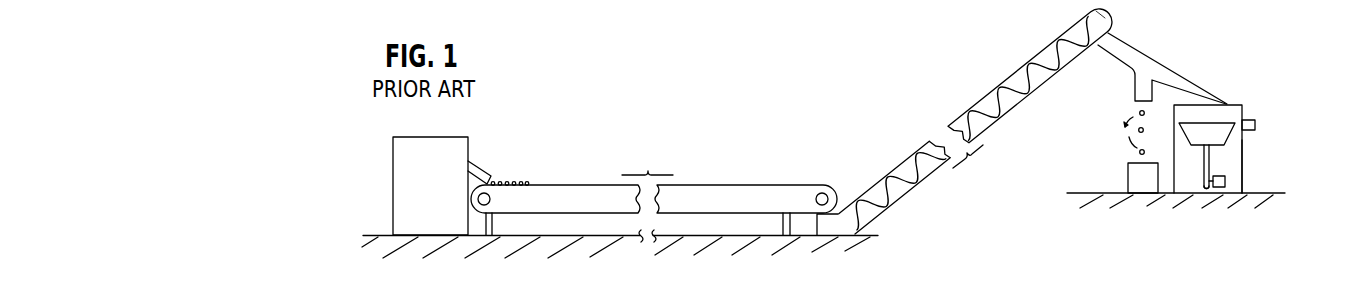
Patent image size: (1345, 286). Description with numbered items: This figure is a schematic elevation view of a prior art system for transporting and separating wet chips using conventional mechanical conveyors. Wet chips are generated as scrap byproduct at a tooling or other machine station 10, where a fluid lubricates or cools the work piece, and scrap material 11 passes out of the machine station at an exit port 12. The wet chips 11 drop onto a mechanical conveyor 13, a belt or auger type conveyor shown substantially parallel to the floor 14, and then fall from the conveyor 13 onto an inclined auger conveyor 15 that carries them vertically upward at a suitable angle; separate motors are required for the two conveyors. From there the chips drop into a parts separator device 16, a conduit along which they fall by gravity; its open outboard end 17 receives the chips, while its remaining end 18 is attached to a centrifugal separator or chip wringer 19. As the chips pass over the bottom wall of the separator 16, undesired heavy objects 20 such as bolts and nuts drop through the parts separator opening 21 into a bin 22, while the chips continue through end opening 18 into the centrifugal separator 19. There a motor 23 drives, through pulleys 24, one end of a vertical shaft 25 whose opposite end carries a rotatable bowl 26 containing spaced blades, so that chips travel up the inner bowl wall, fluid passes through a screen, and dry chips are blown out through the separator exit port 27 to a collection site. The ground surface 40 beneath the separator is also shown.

The machine station 10 is at (408, 165).
The scrap material 11 is at (492, 180).
The exit port 12 is at (470, 168).
The mechanical conveyor 13 is at (549, 184).
The floor 14 is at (743, 237).
The inclined auger conveyor 15 is at (1000, 84).
The parts separator device 16 is at (1140, 60).
The outboard end 17 is at (1117, 26).
The remaining end 18 is at (1232, 105).
The centrifugal separator 19 is at (1243, 142).
The heavy objects 20 is at (1127, 135).
The parts separator opening 21 is at (1133, 108).
The bin 22 is at (1148, 182).
The motor 23 is at (1226, 182).
The pulleys 24 is at (1212, 168).
The vertical shaft 25 is at (1205, 168).
The rotatable bowl 26 is at (1216, 133).
The separator exit port 27 is at (1255, 125).
The ground surface 40 is at (1080, 193).